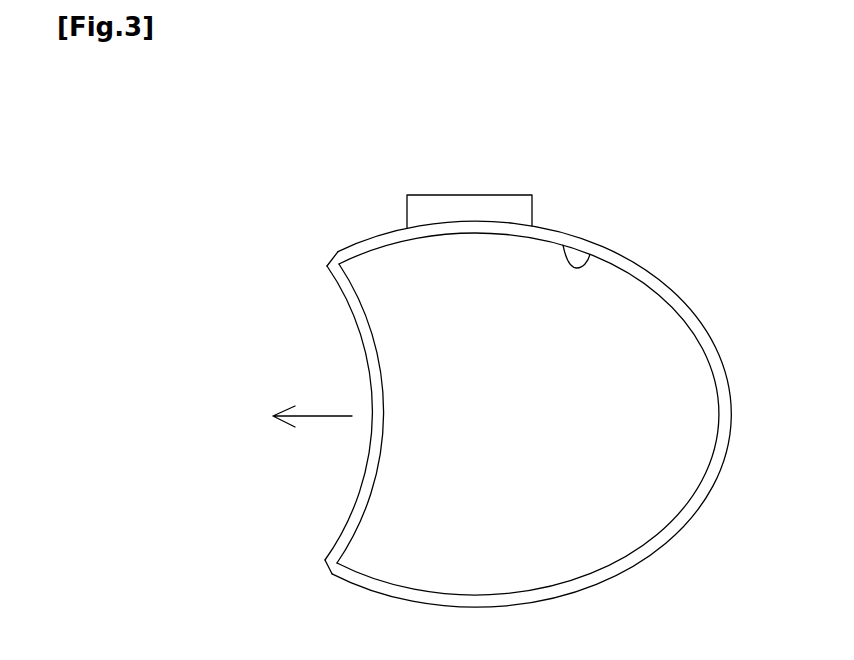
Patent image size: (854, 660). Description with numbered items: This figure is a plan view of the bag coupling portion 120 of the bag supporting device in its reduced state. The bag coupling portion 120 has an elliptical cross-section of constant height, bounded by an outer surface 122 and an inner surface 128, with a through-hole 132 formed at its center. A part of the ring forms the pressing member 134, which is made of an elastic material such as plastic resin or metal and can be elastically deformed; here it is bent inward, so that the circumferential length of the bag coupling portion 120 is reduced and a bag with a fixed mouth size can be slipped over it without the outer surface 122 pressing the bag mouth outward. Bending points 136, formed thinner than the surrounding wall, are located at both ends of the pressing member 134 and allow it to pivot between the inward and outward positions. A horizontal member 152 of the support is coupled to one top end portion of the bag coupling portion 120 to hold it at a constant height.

The bag coupling portion 120 is at (530, 414).
The outer surface 122 is at (725, 372).
The inner surface 128 is at (590, 257).
The through-hole 132 is at (578, 531).
The pressing member 134 is at (360, 332).
The bending points 136 is at (332, 259).
The horizontal member 152 is at (483, 212).